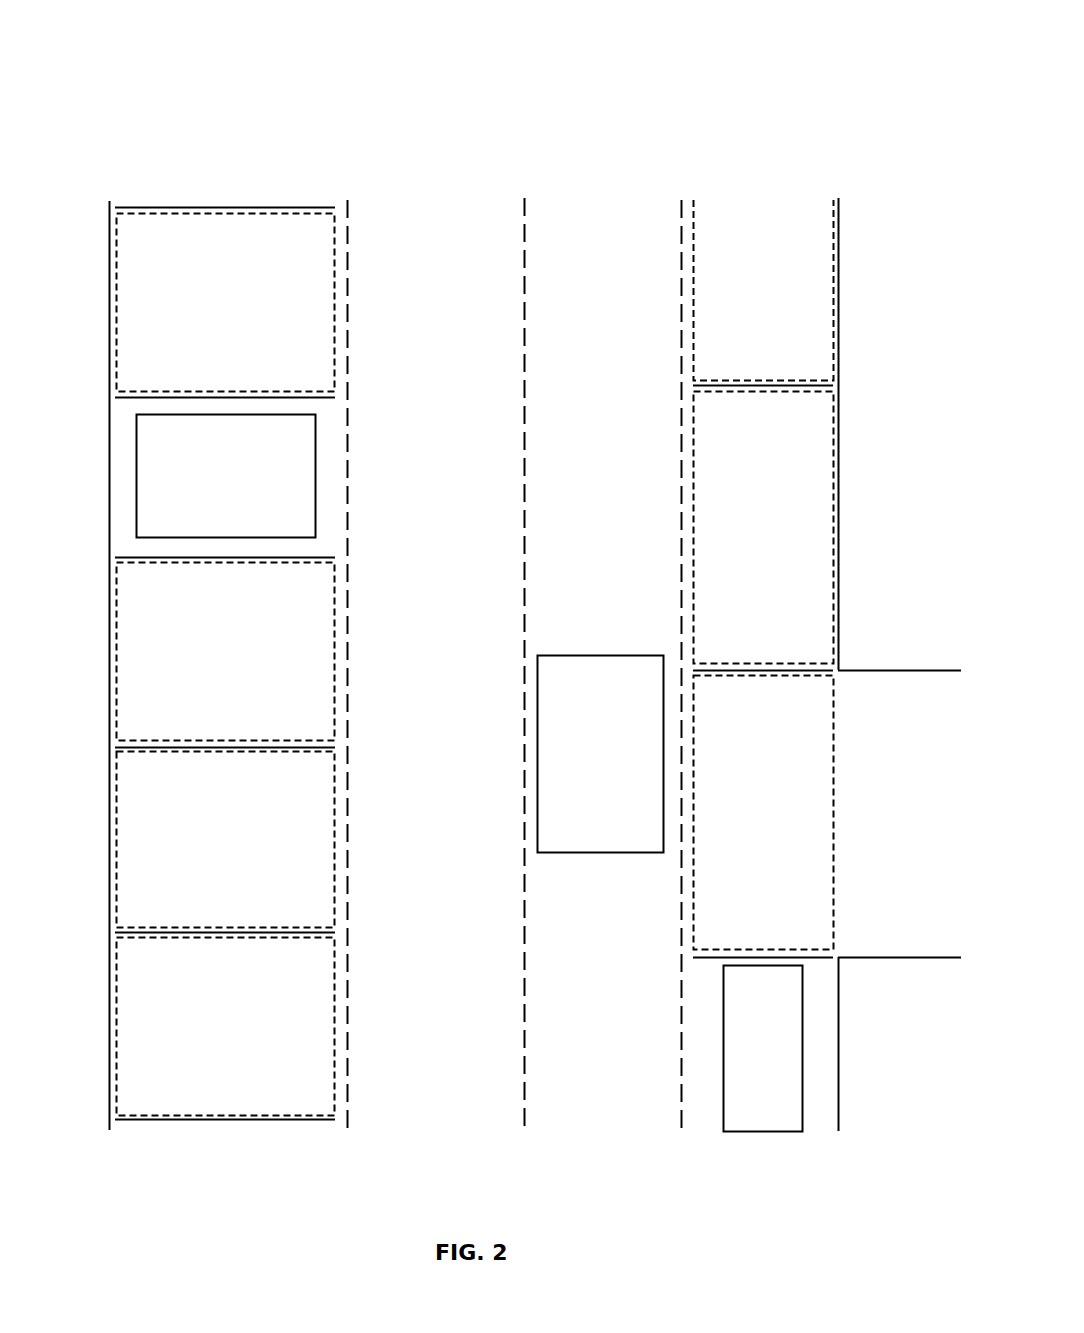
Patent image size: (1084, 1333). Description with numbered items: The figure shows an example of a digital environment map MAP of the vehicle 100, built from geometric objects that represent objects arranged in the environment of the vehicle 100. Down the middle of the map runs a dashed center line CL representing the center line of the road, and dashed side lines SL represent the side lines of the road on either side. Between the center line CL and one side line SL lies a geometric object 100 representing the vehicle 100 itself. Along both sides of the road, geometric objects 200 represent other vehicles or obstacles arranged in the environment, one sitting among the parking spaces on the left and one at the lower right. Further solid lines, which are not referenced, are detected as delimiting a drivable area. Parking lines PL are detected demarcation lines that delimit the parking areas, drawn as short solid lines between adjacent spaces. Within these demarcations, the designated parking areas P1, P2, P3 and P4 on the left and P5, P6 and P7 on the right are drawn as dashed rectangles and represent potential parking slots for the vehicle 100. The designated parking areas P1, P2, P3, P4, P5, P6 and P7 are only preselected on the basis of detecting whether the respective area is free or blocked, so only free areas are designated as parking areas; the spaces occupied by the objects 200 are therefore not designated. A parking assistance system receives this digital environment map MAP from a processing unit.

The digital environment map MAP is at (394, 86).
The side line SL is at (348, 284).
The center line CL is at (524, 511).
The parking line PL is at (124, 208).
The designated parking area P1 is at (116, 285).
The designated parking area P2 is at (116, 656).
The designated parking area P3 is at (116, 829).
The designated parking area P4 is at (116, 1004).
The designated parking area P5 is at (835, 247).
The designated parking area P6 is at (835, 547).
The designated parking area P7 is at (833, 790).
The vehicle 100 is at (616, 655).
The vehicles or other obstacles 200 is at (136, 467).